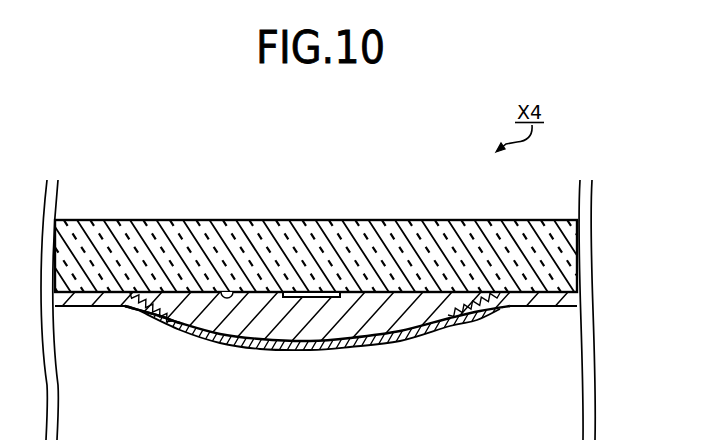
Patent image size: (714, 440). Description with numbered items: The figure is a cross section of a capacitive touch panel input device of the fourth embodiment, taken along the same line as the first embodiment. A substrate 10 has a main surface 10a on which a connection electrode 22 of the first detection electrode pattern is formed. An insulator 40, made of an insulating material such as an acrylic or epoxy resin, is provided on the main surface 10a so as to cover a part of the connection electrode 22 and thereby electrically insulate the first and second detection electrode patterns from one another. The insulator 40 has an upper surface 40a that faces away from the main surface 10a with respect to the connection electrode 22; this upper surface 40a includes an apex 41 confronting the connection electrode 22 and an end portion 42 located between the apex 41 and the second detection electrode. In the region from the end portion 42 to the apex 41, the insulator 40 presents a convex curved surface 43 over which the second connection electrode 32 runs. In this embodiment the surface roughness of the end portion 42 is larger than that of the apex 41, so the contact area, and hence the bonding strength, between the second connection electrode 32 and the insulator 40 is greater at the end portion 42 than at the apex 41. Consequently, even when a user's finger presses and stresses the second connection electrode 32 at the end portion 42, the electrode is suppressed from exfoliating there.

The substrate 10 is at (167, 226).
The main surface 10a is at (227, 291).
The second connection electrode 22 is at (311, 292).
The second connection electrode 32 is at (375, 343).
The insulator 40 is at (268, 330).
The upper surface 40a is at (223, 338).
The apex 41 is at (297, 341).
The end portion 42 is at (150, 292).
The convex curved surface 43 is at (166, 322).